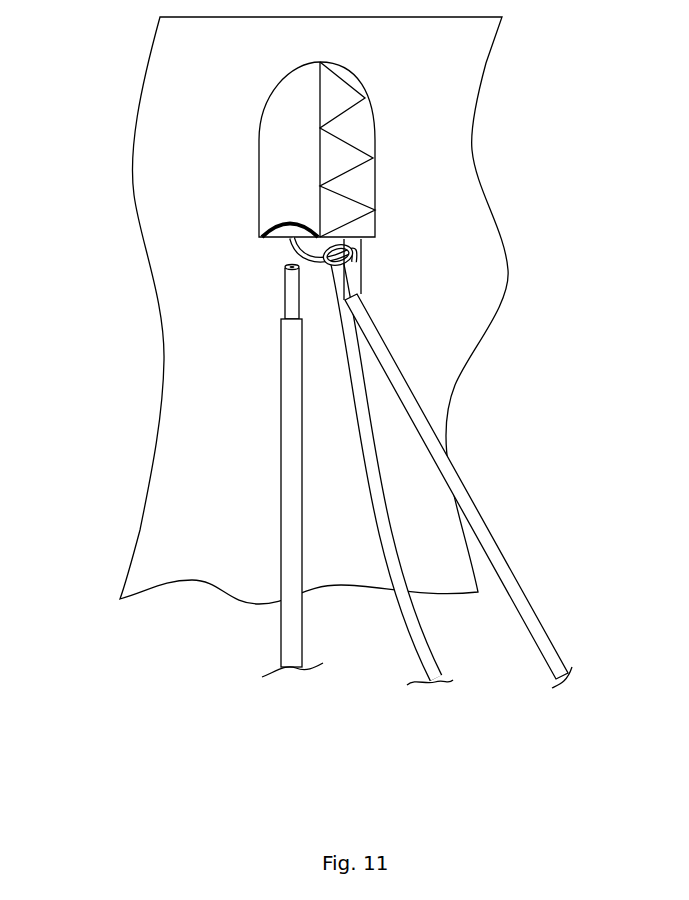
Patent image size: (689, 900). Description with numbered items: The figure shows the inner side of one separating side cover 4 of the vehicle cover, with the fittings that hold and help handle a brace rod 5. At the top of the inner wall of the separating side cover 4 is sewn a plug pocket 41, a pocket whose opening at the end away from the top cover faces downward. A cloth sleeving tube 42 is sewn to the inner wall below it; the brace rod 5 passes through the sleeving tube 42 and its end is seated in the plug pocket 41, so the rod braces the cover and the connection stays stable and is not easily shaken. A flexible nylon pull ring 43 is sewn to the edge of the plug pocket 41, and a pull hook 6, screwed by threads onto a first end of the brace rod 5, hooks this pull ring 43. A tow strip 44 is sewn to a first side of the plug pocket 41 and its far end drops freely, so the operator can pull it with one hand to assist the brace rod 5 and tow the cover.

The separating side cover 4 is at (433, 90).
The plug pocket 41 is at (282, 137).
The sleeving tube 42 is at (286, 447).
The pull ring 43 is at (291, 246).
The tow strip 44 is at (407, 590).
The brace rod 5 is at (281, 292).
The pull hook 6 is at (344, 280).